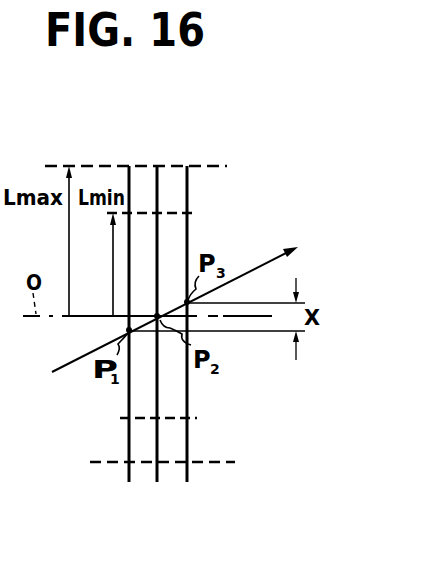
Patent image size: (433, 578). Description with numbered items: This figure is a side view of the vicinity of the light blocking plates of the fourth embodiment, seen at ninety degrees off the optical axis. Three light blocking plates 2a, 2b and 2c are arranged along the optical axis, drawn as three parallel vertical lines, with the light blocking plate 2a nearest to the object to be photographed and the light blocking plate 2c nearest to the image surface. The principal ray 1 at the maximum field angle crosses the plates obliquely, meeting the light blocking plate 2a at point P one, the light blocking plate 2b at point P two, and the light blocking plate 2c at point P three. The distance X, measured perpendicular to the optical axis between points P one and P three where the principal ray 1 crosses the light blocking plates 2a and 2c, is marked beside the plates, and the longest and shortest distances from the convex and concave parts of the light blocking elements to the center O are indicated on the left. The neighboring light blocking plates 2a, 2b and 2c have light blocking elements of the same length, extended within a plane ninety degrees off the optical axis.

The light blocking plate 2a is at (129, 482).
The light blocking plate 2b is at (157, 482).
The light blocking plate 2c is at (187, 482).
The principal ray 1 is at (258, 263).